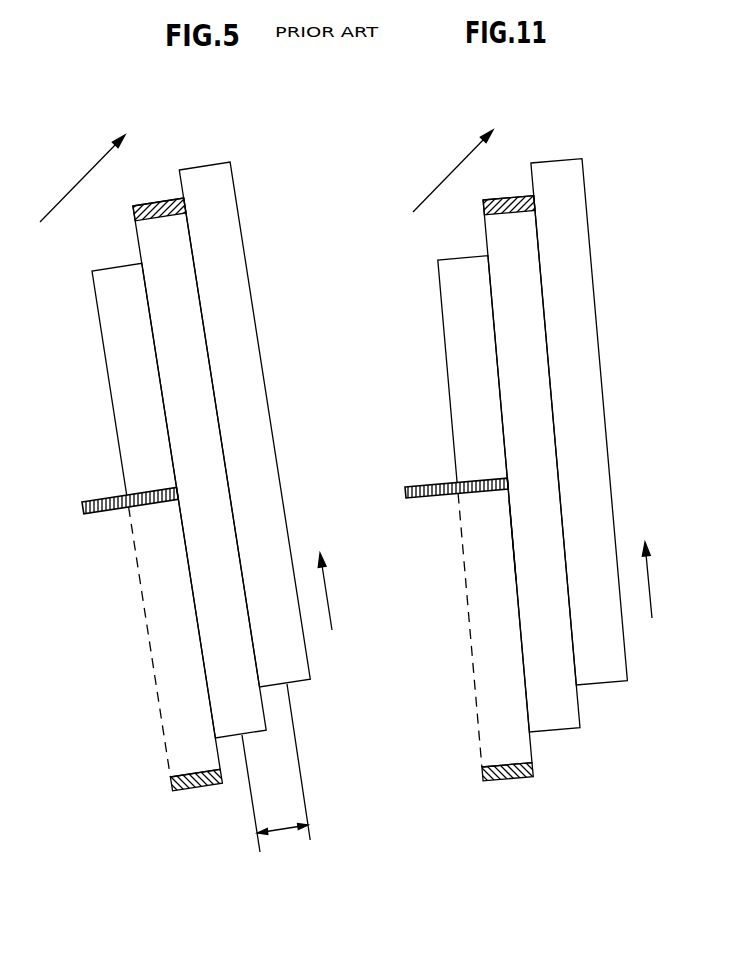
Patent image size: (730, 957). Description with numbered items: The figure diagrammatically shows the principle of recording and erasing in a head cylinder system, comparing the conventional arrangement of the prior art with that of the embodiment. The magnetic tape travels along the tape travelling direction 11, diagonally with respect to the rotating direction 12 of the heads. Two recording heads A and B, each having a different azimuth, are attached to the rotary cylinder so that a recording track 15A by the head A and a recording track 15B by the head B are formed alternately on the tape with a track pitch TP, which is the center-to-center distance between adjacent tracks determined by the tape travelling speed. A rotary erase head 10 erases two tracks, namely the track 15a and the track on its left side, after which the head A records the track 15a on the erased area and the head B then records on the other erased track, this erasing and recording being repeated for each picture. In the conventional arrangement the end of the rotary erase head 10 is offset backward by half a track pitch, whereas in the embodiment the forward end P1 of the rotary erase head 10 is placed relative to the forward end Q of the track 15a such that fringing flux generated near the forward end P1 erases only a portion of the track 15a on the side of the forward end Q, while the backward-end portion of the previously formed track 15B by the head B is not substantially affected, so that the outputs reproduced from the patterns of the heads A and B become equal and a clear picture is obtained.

In FIG. 5, the rotary erase head 10 is at (103, 497).
In FIG. 11, the rotary erase head 10 is at (415, 486).
In FIG. 5, the tape travelling direction 11 is at (68, 193).
In FIG. 11, the tape travelling direction 11 is at (438, 186).
In FIG. 5, the rotating direction of head 12 is at (327, 590).
In FIG. 11, the rotating direction of head 12 is at (650, 588).
In FIG. 5, the recording track by head A 15A is at (303, 680).
In FIG. 11, the recording track by head A 15A is at (620, 681).
In FIG. 5, the recording track by head B 15B is at (258, 732).
In FIG. 11, the recording track by head B 15B is at (563, 729).
In FIG. 5, the recording track to be formed by head A 15a is at (165, 745).
In FIG. 11, the recording track to be formed by head A 15a is at (478, 722).
In FIG. 5, the recording head A is at (197, 792).
In FIG. 11, the recording head A is at (507, 781).
In FIG. 5, the recording head B is at (152, 205).
In FIG. 11, the recording head B is at (505, 199).
In FIG. 11, the forward end of rotary erase head P1 is at (505, 478).
In FIG. 11, the forward end of recording track 15a Q is at (513, 556).
In FIG. 5, the track pitch TP is at (282, 829).